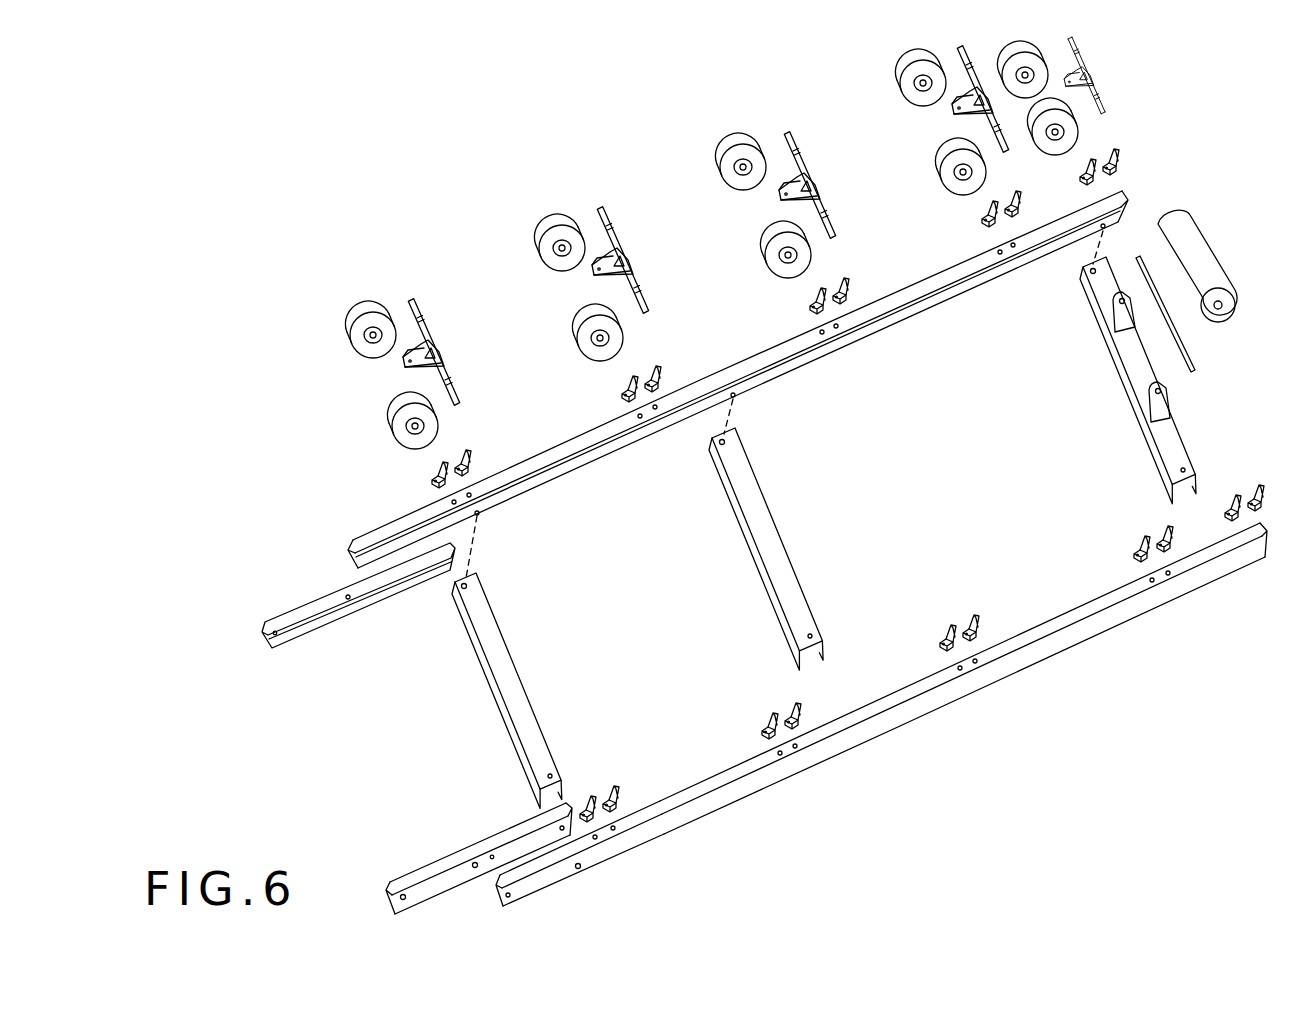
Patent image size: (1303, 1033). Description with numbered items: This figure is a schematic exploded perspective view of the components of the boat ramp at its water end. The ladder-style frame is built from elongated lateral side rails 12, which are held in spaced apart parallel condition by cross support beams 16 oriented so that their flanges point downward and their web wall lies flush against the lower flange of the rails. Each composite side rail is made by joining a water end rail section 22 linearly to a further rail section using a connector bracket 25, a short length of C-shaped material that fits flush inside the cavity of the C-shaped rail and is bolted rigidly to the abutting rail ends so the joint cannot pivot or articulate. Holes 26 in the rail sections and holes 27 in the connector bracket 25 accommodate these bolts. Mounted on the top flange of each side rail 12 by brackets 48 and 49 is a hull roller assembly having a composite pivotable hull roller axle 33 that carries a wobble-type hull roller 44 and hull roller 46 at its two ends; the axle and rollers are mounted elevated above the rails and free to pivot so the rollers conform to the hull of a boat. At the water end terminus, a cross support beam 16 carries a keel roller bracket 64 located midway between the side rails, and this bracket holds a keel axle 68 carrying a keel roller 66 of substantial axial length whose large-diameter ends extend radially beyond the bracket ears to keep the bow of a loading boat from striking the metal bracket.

The lateral side rail 12 is at (1053, 640).
The cross support beam 16 is at (512, 690).
The water end rail section 22 is at (862, 735).
The connector bracket 25 is at (479, 866).
The holes 26 is at (579, 870).
The holes 27 is at (405, 897).
The hull roller axle 33 is at (437, 342).
The hull roller 44 is at (372, 310).
The hull roller 46 is at (401, 404).
The bracket 48 is at (440, 476).
The bracket 49 is at (468, 460).
The keel roller bracket 64 is at (1137, 348).
The keel roller 66 is at (1190, 252).
The keel axle 68 is at (1195, 340).